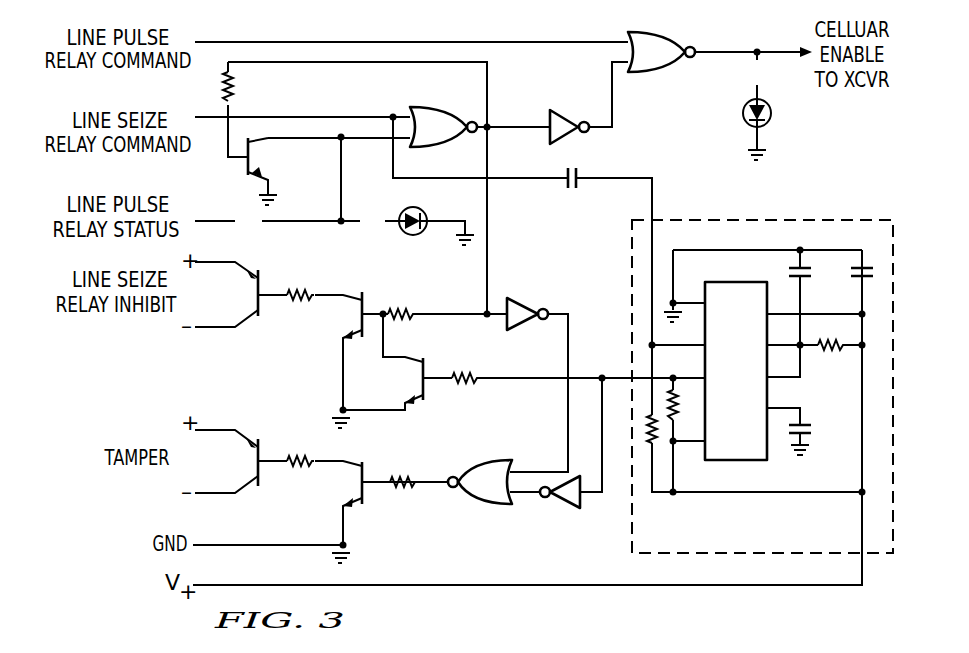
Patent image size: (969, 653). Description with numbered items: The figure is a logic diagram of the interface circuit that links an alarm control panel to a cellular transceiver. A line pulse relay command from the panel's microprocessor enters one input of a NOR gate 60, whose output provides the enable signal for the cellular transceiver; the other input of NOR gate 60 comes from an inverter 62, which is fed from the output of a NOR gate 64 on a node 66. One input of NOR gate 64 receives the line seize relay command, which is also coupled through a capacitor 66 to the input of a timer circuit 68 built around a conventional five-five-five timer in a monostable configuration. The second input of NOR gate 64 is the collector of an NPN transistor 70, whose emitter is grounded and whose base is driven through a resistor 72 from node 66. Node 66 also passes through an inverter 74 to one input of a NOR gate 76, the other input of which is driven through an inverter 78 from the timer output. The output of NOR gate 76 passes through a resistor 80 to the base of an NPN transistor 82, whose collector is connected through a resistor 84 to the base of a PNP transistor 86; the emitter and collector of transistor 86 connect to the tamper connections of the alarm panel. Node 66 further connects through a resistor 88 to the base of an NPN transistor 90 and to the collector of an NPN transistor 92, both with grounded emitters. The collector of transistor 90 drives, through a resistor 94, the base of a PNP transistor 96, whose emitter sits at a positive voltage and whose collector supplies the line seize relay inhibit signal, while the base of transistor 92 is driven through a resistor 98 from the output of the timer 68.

The NOR gate 60 is at (655, 75).
The inverter 62 is at (556, 110).
The NOR gate 64 is at (420, 110).
The node / capacitor 66 is at (490, 130).
The timer circuit 68 is at (830, 218).
The NPN transistor 70 is at (266, 162).
The resistor 72 is at (236, 88).
The inverter 74 is at (520, 298).
The NOR gate 76 is at (478, 504).
The inverter 78 is at (560, 506).
The resistor 80 is at (402, 478).
The NPN transistor 82 is at (366, 494).
The resistor 84 is at (300, 457).
The PNP transistor 86 is at (262, 475).
The resistor 88 is at (405, 310).
The NPN transistor 90 is at (352, 290).
The NPN transistor 92 is at (428, 396).
The resistor 94 is at (296, 290).
The PNP transistor 96 is at (262, 304).
The resistor 98 is at (462, 374).